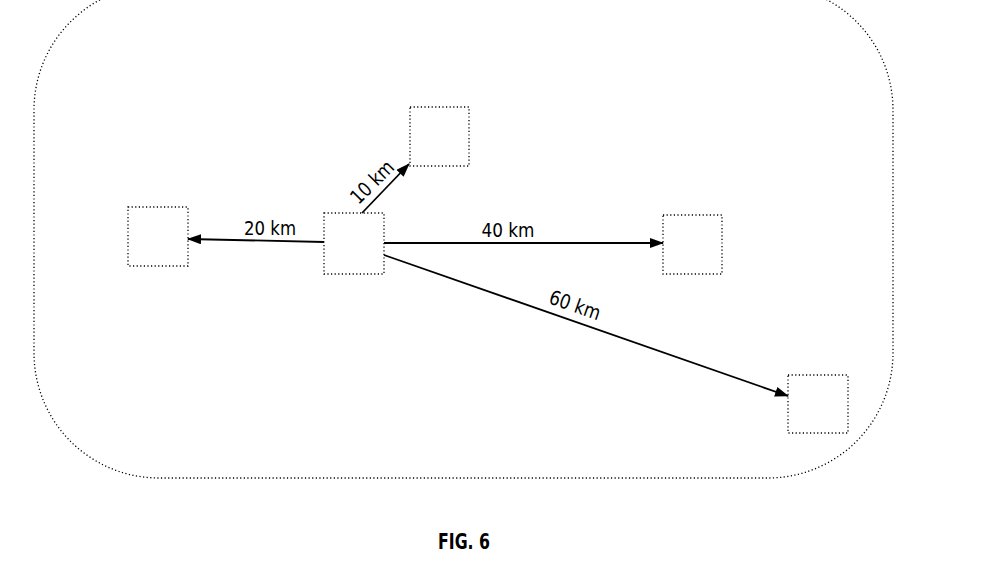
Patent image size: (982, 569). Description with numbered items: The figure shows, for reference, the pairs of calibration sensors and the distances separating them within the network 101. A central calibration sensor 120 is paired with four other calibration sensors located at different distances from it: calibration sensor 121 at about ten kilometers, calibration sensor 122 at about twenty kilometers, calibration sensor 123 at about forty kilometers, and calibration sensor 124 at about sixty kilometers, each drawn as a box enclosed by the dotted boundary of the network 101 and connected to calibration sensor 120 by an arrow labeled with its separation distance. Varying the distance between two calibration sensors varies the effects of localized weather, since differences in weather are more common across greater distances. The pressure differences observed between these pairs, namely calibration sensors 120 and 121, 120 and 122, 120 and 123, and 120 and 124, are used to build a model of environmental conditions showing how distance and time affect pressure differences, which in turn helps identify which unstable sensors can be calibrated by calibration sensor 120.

The network 101 is at (517, 480).
The calibration sensor 120 is at (343, 274).
The calibration sensor 121 is at (438, 107).
The calibration sensor 122 is at (160, 266).
The calibration sensor 123 is at (722, 232).
The calibration sensor 124 is at (815, 375).